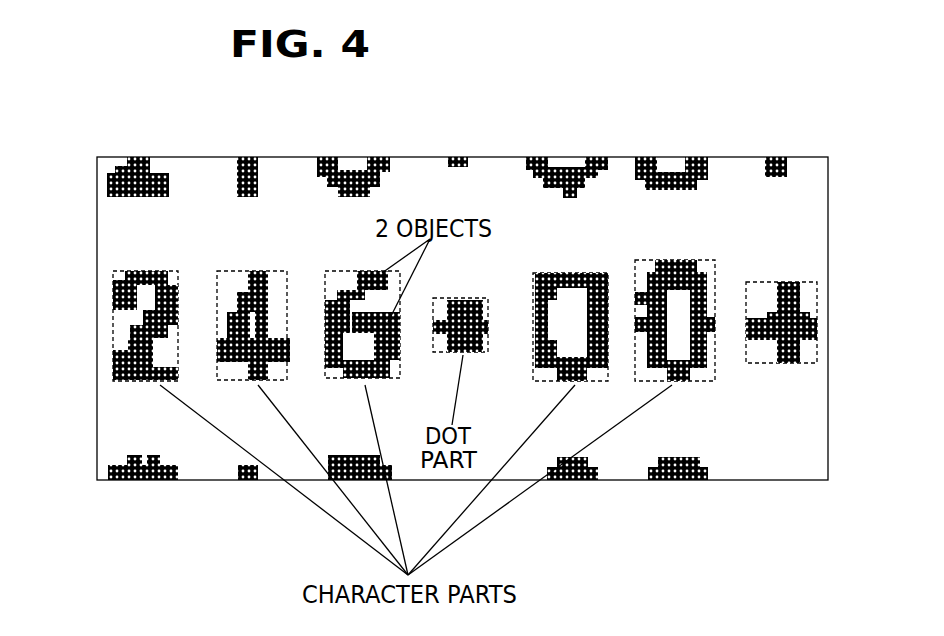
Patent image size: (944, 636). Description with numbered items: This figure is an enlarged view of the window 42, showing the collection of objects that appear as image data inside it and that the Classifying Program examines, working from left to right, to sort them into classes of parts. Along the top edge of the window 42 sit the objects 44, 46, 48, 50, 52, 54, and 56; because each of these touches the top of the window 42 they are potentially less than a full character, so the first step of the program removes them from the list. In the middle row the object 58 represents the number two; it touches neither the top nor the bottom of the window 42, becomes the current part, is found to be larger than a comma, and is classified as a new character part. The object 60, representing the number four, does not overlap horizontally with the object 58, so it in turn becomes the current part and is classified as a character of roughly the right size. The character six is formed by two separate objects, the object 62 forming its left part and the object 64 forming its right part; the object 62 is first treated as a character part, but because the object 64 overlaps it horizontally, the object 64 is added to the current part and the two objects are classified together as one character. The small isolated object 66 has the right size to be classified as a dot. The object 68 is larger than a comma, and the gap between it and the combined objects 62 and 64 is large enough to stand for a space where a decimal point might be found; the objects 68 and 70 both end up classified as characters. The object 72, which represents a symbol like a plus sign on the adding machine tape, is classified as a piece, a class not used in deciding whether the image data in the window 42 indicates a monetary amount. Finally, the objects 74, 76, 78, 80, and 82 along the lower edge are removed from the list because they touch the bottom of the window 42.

The window 42 is at (188, 156).
The object 44 is at (113, 180).
The object 46 is at (250, 157).
The object 48 is at (378, 157).
The object 50 is at (460, 157).
The object 52 is at (597, 157).
The object 54 is at (697, 157).
The object 56 is at (777, 157).
The object "2" 58 is at (115, 299).
The object "4" 60 is at (257, 273).
The object (left part of character "6") 62 is at (363, 324).
The object (right part of character "6") 64 is at (372, 378).
The object (dot) 66 is at (465, 300).
The object "0" 68 is at (585, 273).
The object "0" 70 is at (683, 260).
The object (+ symbol) 72 is at (800, 300).
The object 74 is at (150, 480).
The object 76 is at (248, 480).
The object 78 is at (353, 455).
The object 80 is at (578, 480).
The object 82 is at (680, 480).